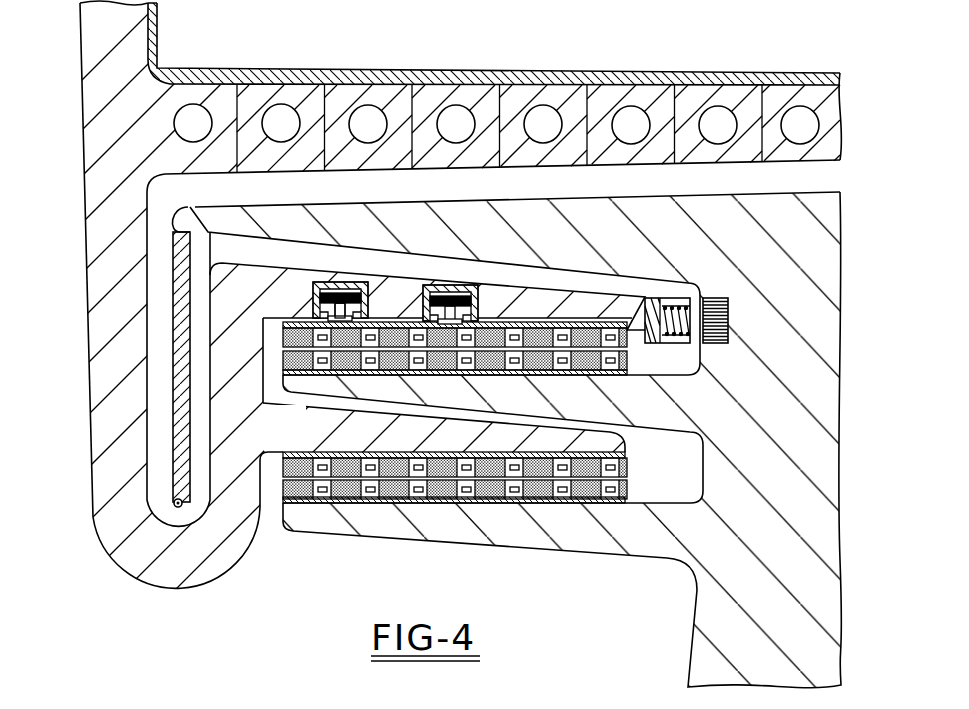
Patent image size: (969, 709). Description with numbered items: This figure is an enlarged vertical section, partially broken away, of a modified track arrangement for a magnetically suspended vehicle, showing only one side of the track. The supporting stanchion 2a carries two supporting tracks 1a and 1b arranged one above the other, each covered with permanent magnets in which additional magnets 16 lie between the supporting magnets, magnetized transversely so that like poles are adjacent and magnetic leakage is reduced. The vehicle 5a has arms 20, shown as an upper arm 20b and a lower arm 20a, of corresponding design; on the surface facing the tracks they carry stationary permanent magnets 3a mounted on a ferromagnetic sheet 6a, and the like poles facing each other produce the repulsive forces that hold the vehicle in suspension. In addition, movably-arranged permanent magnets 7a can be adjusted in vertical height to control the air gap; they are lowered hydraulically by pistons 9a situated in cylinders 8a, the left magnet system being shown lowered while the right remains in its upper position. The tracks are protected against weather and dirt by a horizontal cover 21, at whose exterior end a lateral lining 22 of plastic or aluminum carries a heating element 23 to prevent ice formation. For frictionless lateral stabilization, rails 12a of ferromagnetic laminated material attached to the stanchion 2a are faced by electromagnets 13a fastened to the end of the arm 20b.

The supporting track 1a is at (512, 540).
The supporting track 1b is at (642, 415).
The supporting stanchion 2a is at (698, 640).
The permanent magnets 3a is at (395, 500).
The vehicle 5a is at (81, 84).
The ferromagnetic sheet 6a is at (612, 502).
The movably-arranged permanent magnets 7a is at (482, 314).
The cylinders 8a is at (320, 283).
The pistons 9a is at (341, 289).
The rails 12a is at (728, 342).
The electromagnets 13a is at (676, 343).
The additional magnets 16 is at (536, 488).
The arms 20 is at (220, 557).
The arm 20a is at (297, 440).
The arm 20b is at (543, 298).
The horizontal cover 21 is at (575, 210).
The lateral lining 22 is at (176, 357).
The heating element 23 is at (178, 503).